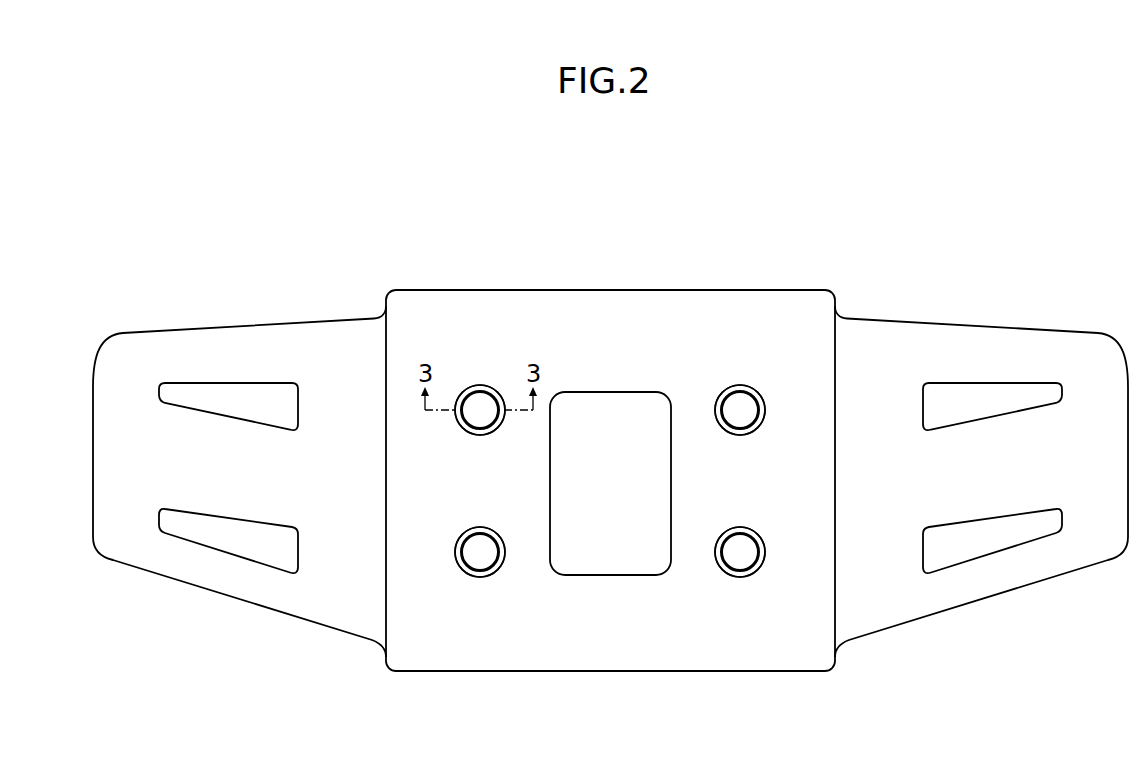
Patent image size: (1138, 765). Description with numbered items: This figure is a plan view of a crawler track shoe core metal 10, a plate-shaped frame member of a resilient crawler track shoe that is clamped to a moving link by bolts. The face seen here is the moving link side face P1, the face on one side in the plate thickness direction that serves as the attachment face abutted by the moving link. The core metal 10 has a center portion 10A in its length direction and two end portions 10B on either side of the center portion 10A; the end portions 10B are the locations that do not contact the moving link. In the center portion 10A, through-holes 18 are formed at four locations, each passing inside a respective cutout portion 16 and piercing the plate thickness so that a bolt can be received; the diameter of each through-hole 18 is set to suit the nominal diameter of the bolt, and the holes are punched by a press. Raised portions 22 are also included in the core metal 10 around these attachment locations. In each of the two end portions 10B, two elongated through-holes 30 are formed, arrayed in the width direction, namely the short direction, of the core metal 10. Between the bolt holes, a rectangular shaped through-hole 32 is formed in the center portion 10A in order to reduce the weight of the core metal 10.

The crawler track shoe core metal 10 is at (906, 280).
The center portion 10A is at (561, 289).
The end portions 10B is at (165, 332).
The moving link side face P1 is at (653, 303).
The cutout portions 16 is at (478, 435).
The through-holes 18 is at (462, 398).
The raised portions 22 is at (478, 386).
The through-holes 30 is at (238, 384).
The rectangular shaped through-hole 32 is at (598, 576).